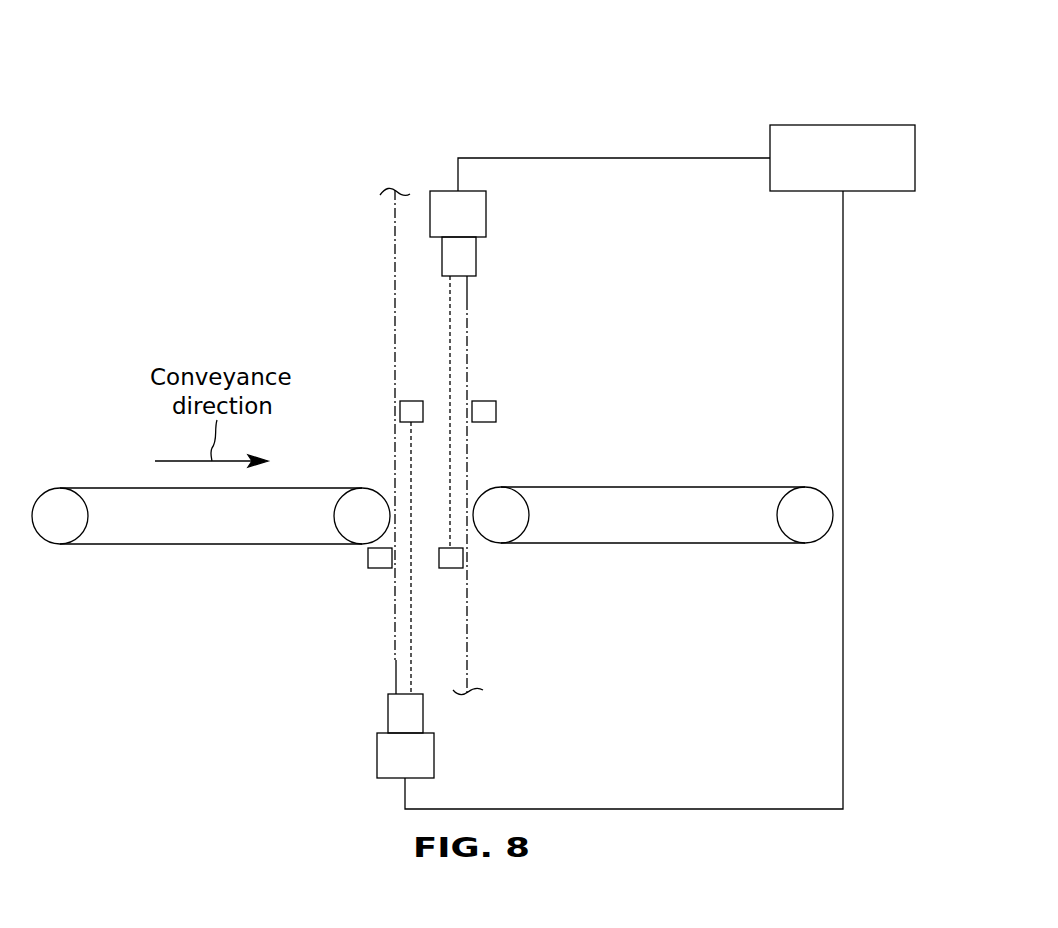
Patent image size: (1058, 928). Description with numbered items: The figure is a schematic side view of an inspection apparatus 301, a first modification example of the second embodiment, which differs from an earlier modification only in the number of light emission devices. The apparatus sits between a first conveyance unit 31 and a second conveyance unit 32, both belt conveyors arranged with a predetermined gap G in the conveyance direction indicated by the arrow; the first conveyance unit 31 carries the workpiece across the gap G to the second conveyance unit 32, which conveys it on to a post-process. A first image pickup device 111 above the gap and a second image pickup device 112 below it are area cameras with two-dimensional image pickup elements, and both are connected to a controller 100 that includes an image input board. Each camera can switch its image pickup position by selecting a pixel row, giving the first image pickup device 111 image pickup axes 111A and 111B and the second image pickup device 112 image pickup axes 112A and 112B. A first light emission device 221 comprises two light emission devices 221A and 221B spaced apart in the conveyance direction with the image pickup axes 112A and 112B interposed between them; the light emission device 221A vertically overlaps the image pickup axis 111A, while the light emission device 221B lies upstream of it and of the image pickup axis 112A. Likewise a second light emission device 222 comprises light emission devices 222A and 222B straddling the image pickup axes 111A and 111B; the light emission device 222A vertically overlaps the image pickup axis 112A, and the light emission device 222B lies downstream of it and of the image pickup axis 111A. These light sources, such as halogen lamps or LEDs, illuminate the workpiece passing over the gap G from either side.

The inspection apparatus 301 is at (328, 92).
The controller 100 is at (845, 125).
The first image pickup device 111 is at (486, 212).
The image pickup axis 111A is at (453, 333).
The image pickup axis 111B is at (470, 300).
The second image pickup device 112 is at (434, 752).
The image pickup axis 112A is at (411, 630).
The image pickup axis 112B is at (396, 663).
The first light emission device 221 is at (598, 677).
The light emission device 221A is at (451, 568).
The light emission device 221B is at (380, 568).
The second light emission device 222 is at (378, 293).
The light emission device 222A is at (407, 401).
The light emission device 222B is at (481, 401).
The first conveyance unit 31 is at (100, 488).
The second conveyance unit 32 is at (735, 487).
The predetermined gap G is at (432, 514).